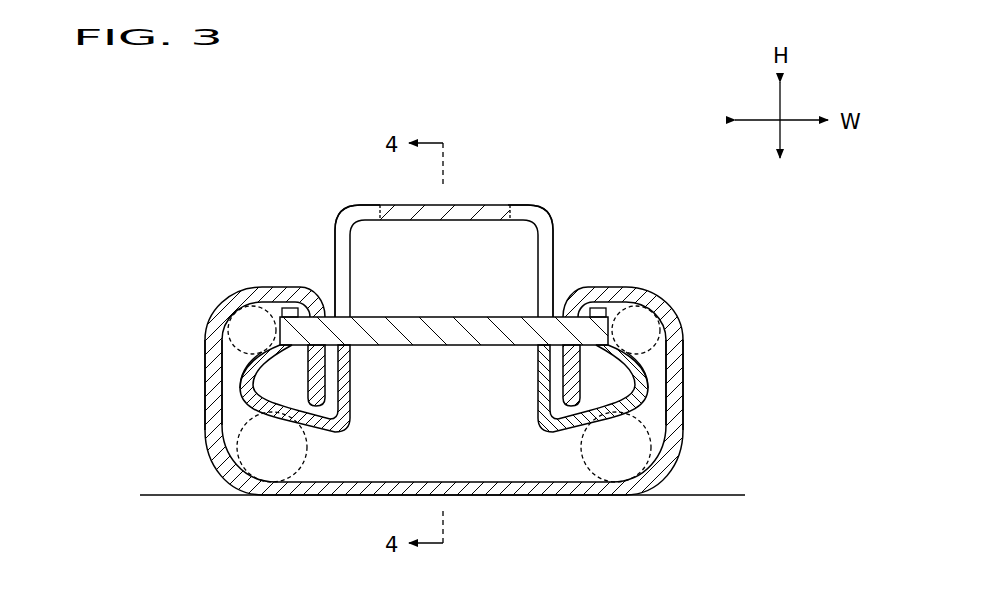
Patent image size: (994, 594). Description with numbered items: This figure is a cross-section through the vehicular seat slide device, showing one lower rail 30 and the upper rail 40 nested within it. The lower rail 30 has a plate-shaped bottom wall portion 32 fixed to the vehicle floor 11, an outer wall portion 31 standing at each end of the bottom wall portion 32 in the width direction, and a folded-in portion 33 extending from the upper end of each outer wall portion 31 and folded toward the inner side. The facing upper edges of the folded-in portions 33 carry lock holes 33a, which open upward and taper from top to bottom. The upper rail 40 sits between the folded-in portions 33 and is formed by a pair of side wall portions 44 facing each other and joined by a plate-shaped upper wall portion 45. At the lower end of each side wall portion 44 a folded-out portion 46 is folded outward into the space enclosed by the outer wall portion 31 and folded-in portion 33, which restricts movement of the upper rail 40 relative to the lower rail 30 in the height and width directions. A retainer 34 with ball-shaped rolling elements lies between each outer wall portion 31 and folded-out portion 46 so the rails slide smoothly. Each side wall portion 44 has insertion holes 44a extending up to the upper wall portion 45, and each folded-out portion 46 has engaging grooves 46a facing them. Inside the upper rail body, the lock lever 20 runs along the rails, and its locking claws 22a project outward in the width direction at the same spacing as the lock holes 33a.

The vehicle floor 11 is at (725, 495).
The lock lever 20 is at (440, 316).
The locking claw 22a is at (240, 296).
The lower rail 30 is at (685, 318).
The outer wall portion 31 is at (218, 396).
The bottom wall portion 32 is at (503, 496).
The folded-in portion 33 is at (322, 370).
The lock hole 33a is at (292, 290).
The retainer 34 is at (208, 372).
The upper rail 40 is at (496, 211).
The side wall portion 44 is at (335, 248).
The insertion hole 44a is at (543, 197).
The upper wall portion 45 is at (418, 211).
The folded-out portion 46 is at (250, 395).
The engaging groove 46a is at (232, 346).